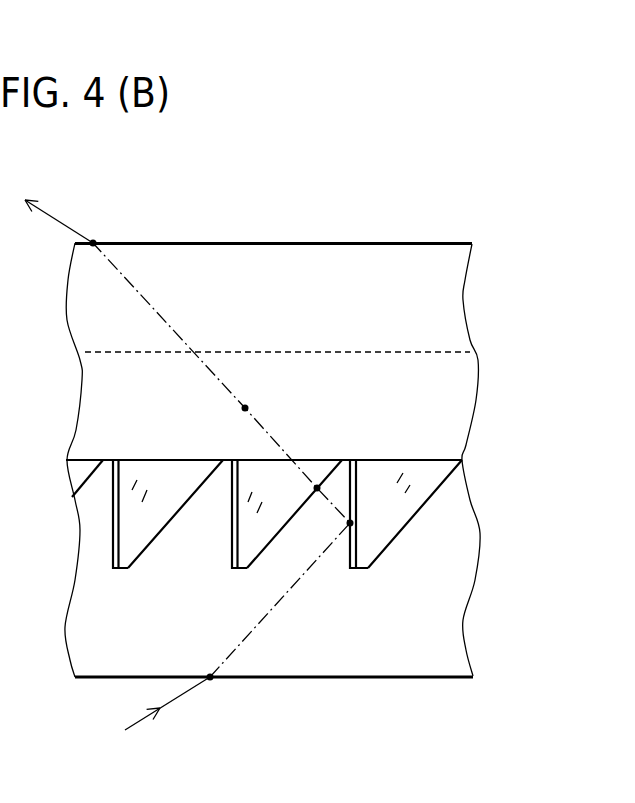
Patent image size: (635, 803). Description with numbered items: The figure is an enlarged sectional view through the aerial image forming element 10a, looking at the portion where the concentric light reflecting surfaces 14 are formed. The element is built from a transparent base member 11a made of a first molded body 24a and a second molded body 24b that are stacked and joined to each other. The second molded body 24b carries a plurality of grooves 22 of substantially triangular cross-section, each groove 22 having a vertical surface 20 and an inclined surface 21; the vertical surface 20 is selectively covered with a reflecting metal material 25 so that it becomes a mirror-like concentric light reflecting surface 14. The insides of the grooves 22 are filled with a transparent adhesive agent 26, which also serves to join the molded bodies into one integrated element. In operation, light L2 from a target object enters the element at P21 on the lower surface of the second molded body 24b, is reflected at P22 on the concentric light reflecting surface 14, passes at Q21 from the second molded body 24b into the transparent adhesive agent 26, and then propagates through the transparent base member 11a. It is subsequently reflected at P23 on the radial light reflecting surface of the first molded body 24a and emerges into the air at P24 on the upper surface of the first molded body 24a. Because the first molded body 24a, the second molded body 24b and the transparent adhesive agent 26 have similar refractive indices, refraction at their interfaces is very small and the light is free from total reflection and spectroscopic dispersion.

The aerial image forming element 10a is at (318, 393).
The first molded body 24a is at (450, 318).
The second molded body 24b is at (440, 627).
The transparent base member 11a is at (548, 450).
The vertical surface 20 is at (286, 526).
The inclined surface 21 is at (290, 495).
The groove 22 is at (430, 460).
The reflecting metal material 25 is at (232, 503).
The transparent adhesive agent 26 is at (270, 520).
The concentric light reflecting surface 14 is at (232, 547).
The light L2 is at (236, 465).
The entrance point P21 is at (210, 677).
The reflection point P22 is at (350, 523).
The interface point Q21 is at (317, 488).
The reflection point P23 is at (243, 409).
The exit point P24 is at (93, 243).